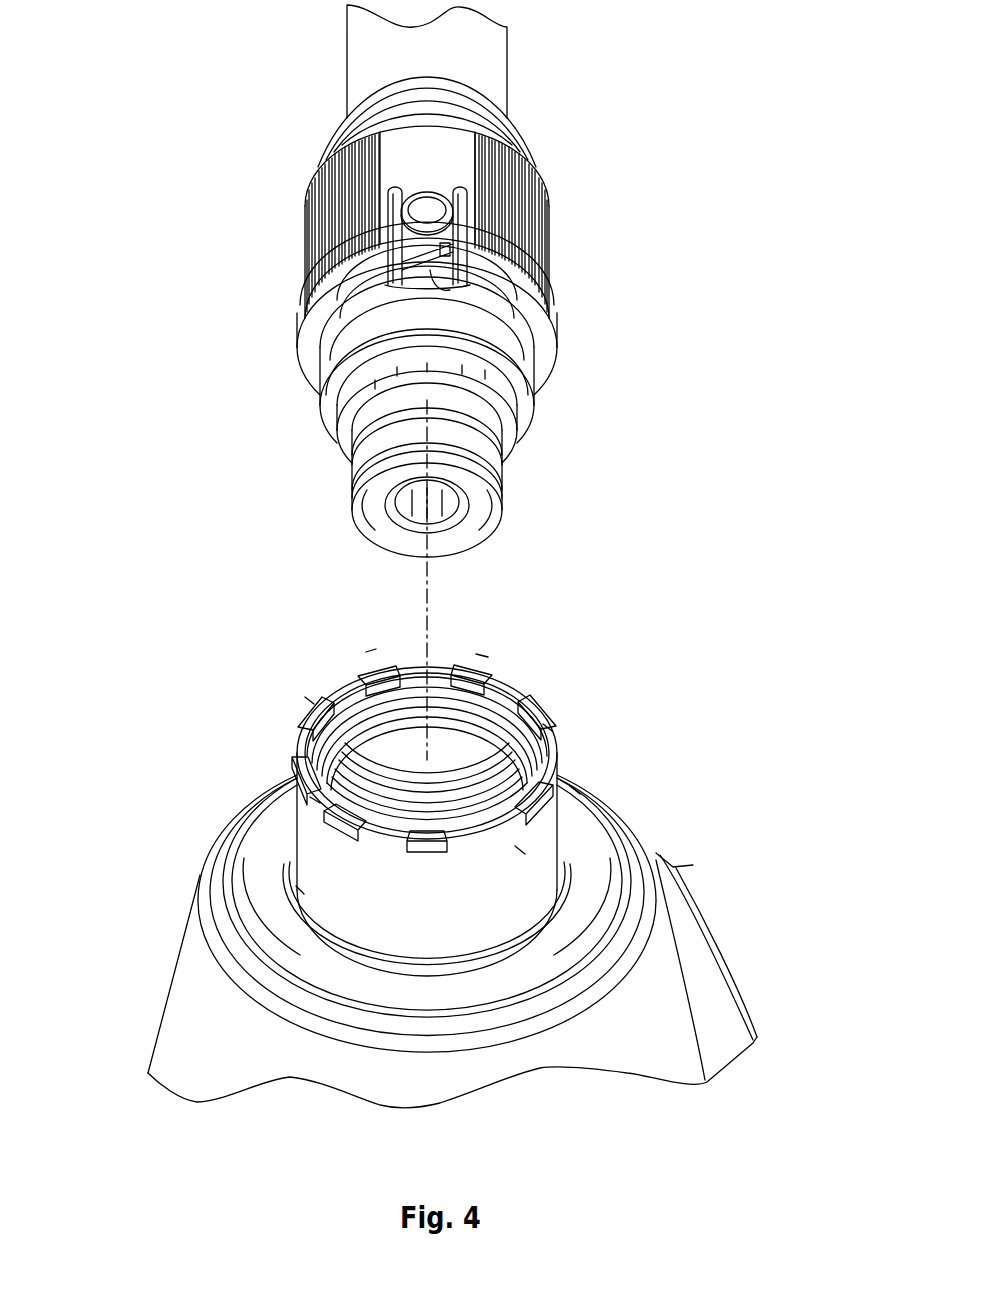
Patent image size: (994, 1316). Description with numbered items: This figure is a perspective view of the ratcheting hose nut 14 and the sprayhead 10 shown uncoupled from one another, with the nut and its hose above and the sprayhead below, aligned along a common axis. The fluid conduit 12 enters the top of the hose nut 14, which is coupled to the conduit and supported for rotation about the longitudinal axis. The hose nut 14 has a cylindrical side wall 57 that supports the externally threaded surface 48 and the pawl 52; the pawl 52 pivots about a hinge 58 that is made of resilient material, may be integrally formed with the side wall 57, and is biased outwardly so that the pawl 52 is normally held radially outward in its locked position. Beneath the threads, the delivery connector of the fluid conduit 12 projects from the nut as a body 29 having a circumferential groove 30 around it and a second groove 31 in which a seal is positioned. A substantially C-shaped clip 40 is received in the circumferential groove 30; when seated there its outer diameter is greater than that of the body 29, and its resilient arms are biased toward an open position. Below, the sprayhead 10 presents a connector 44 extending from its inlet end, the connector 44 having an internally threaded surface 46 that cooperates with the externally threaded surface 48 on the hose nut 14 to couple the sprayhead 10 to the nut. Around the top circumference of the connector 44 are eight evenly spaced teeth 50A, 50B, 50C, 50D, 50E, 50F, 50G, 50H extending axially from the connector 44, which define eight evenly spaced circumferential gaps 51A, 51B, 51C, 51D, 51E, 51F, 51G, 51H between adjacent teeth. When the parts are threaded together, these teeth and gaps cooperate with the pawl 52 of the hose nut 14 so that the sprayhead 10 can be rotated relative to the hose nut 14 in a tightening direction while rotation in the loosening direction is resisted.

The sprayhead 10 is at (175, 963).
The fluid conduit 12 is at (507, 53).
The ratcheting hose nut 14 is at (548, 224).
The body 29 is at (500, 472).
The circumferential groove 30 is at (347, 417).
The second groove 31 is at (358, 468).
The clip 40 is at (378, 383).
The connector 44 is at (500, 907).
The internally threaded surface 46 is at (490, 737).
The externally threaded surface 48 is at (530, 407).
The pawl 52 is at (445, 290).
The cylindrical side wall 57 is at (545, 182).
The hinge 58 is at (415, 183).
The tooth 50A is at (575, 790).
The tooth 50B is at (520, 850).
The tooth 50C is at (300, 890).
The tooth 50D is at (315, 800).
The tooth 50E is at (310, 700).
The tooth 50F is at (370, 652).
The tooth 50G is at (482, 653).
The tooth 50H is at (548, 728).
The gap 51A is at (550, 813).
The gap 51B is at (432, 852).
The gap 51C is at (340, 822).
The gap 51D is at (305, 745).
The gap 51E is at (338, 702).
The gap 51F is at (417, 660).
The gap 51G is at (550, 690).
The gap 51H is at (550, 762).